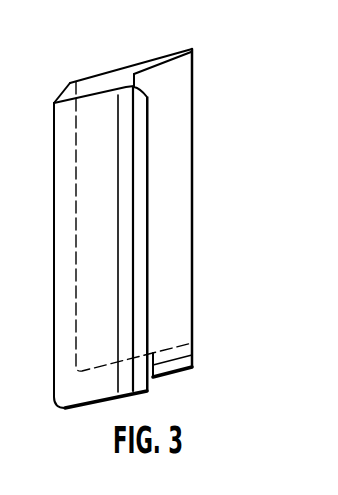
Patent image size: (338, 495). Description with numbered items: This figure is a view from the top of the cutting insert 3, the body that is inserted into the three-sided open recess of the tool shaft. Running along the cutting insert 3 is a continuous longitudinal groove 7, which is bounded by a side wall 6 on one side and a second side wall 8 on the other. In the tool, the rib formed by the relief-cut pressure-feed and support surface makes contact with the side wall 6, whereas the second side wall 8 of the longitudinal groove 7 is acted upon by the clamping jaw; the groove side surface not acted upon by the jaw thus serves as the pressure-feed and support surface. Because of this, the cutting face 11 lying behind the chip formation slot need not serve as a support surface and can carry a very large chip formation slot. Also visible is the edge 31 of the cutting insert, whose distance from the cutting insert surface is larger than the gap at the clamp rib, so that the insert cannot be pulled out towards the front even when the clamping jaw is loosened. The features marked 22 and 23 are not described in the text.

The cutting insert 3 is at (94, 108).
The side wall 6 is at (150, 295).
The longitudinal groove 7 is at (160, 211).
The second side wall 8 is at (176, 153).
The cutting face 11 is at (128, 277).
The side wall 22 is at (55, 238).
The top edge 23 is at (192, 49).
The edge of the cutting insert 31 is at (195, 87).